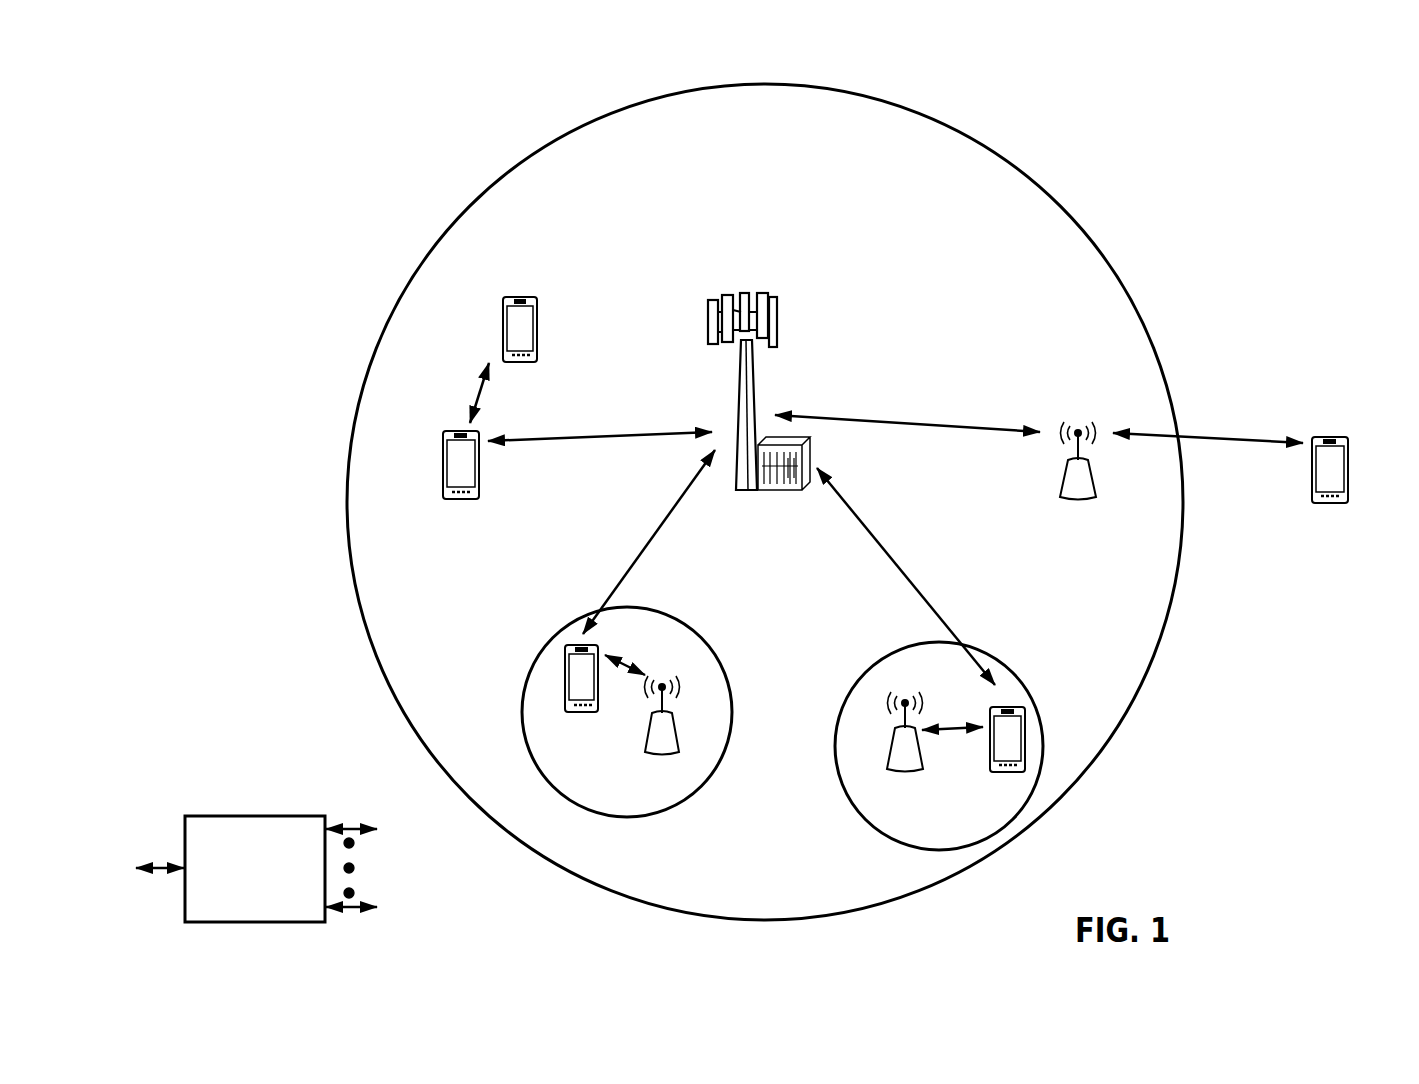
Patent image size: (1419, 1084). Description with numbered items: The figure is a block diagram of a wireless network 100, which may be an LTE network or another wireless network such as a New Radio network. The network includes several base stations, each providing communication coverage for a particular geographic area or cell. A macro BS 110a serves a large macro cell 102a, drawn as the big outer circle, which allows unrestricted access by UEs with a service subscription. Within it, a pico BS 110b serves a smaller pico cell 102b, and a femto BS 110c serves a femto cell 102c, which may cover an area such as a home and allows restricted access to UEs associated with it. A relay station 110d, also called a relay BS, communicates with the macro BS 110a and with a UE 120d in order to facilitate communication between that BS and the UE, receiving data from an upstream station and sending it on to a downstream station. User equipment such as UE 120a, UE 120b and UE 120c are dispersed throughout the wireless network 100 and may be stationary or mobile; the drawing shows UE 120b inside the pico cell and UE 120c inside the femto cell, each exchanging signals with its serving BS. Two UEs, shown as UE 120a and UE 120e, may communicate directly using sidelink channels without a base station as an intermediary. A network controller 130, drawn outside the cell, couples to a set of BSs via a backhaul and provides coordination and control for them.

The wireless network 100 is at (240, 81).
The macro cell 102a is at (1042, 190).
The pico cell 102b is at (718, 650).
The femto cell 102c is at (878, 660).
The macro BS 110a is at (752, 283).
The pico BS 110b is at (687, 741).
The femto BS 110c is at (888, 760).
The relay station 110d is at (1079, 424).
The UE 120a is at (443, 460).
The UE 120b is at (567, 713).
The UE 120c is at (993, 772).
The UE 120d is at (1340, 437).
The UE 120e is at (502, 318).
The network controller 130 is at (254, 816).